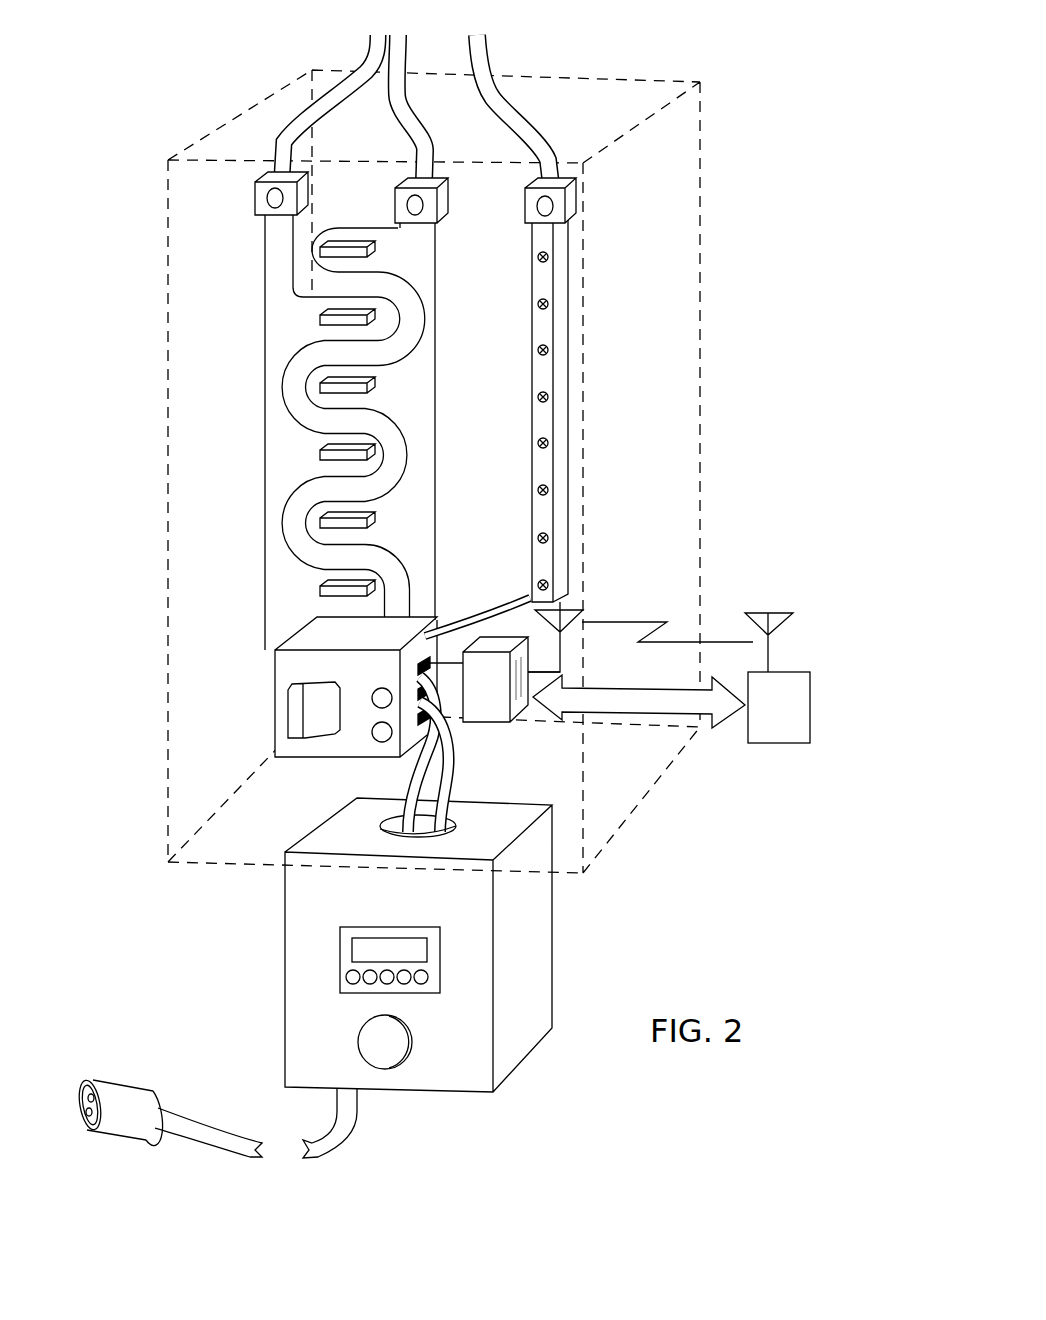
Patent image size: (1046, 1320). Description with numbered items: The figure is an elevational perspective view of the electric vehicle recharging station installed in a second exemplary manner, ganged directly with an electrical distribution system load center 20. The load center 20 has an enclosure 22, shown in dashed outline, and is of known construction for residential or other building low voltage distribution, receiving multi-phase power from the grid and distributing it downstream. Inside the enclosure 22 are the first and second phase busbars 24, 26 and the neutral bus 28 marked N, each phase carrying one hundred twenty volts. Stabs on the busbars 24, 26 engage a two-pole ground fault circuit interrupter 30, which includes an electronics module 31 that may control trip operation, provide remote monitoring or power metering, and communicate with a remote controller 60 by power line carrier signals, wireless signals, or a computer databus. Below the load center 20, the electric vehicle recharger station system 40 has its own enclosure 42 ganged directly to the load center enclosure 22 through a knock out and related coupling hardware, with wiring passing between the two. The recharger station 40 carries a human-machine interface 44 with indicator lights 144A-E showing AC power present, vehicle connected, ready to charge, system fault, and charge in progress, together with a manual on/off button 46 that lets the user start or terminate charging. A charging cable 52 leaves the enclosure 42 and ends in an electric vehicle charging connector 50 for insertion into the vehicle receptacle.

The load center 20 is at (466, 596).
The enclosure 22 is at (186, 465).
The first phase busbar 24 is at (272, 290).
The second phase busbar 26 is at (410, 525).
The neutral bus 28 is at (553, 268).
The ground fault circuit interrupter 30 is at (332, 747).
The electronics module 31 is at (498, 708).
The remote controller 60 is at (772, 720).
The electric vehicle recharger station system 40 is at (438, 903).
The enclosure 42 is at (297, 883).
The human-machine interface 44 is at (340, 963).
The indicator lights 144A-E is at (443, 980).
The manual on/off button 46 is at (400, 1048).
The electric vehicle charging connector 50 is at (135, 1098).
The charging cable 52 is at (340, 1128).
The neutral terminal N is at (575, 200).